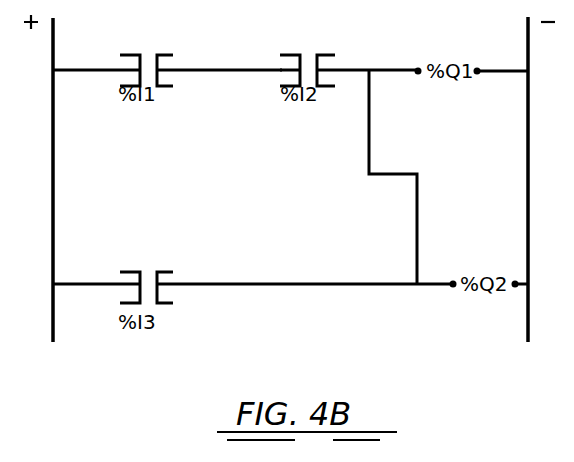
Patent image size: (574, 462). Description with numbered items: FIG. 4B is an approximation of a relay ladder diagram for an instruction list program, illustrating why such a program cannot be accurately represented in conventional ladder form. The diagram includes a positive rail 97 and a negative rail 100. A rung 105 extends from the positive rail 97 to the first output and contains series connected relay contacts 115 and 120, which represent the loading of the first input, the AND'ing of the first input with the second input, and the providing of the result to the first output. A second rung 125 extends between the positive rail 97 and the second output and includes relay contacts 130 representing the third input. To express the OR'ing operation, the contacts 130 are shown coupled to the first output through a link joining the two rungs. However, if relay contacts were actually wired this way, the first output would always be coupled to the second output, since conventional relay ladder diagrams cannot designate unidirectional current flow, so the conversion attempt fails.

The positive rail 97 is at (55, 150).
The negative rail 100 is at (528, 200).
The rung 105 is at (200, 68).
The relay contacts 115 is at (146, 58).
The relay contacts 120 is at (308, 56).
The rung 125 is at (248, 283).
The relay contacts 130 is at (146, 273).